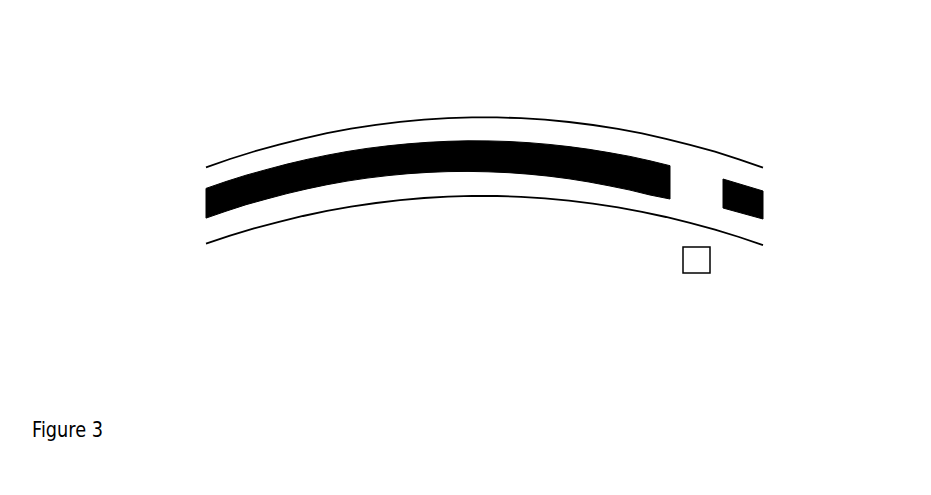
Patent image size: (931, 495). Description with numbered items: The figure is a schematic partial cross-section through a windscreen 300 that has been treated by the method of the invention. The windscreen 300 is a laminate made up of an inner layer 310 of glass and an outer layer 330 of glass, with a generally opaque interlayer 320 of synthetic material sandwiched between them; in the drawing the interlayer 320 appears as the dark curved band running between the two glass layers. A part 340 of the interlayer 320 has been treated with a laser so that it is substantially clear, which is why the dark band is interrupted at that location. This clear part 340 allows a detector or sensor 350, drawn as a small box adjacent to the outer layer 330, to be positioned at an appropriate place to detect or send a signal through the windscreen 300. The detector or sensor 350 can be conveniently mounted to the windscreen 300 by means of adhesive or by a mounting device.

The windscreen 300 is at (474, 187).
The inner layer 310 is at (259, 166).
The interlayer 320 is at (582, 148).
The outer layer 330 is at (352, 192).
The part of the interlayer 340 is at (697, 180).
The detector or sensor 350 is at (697, 261).